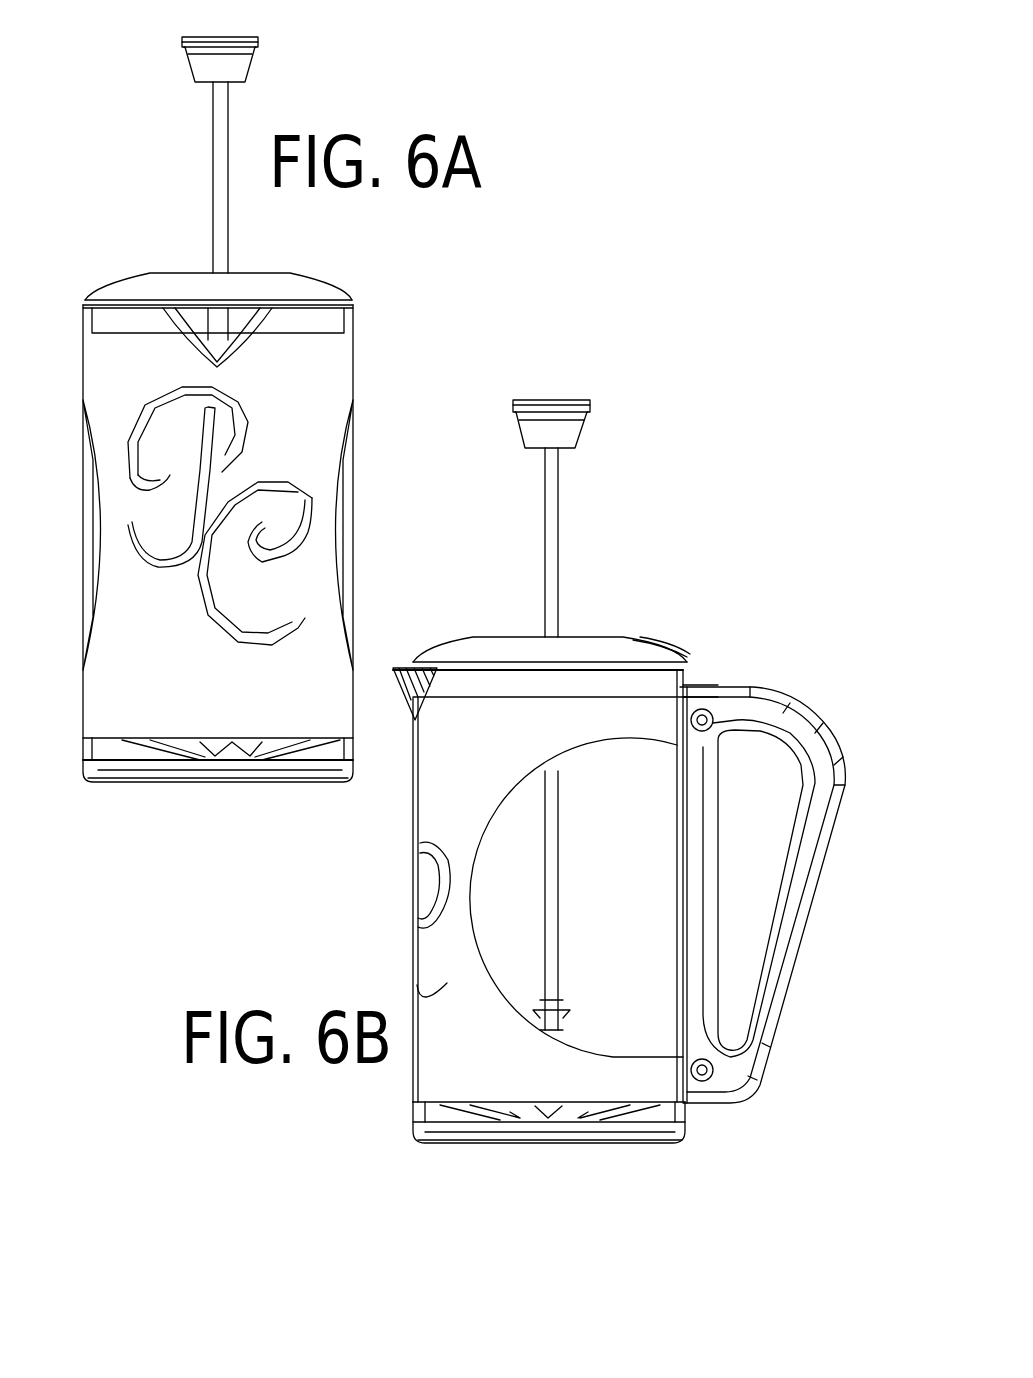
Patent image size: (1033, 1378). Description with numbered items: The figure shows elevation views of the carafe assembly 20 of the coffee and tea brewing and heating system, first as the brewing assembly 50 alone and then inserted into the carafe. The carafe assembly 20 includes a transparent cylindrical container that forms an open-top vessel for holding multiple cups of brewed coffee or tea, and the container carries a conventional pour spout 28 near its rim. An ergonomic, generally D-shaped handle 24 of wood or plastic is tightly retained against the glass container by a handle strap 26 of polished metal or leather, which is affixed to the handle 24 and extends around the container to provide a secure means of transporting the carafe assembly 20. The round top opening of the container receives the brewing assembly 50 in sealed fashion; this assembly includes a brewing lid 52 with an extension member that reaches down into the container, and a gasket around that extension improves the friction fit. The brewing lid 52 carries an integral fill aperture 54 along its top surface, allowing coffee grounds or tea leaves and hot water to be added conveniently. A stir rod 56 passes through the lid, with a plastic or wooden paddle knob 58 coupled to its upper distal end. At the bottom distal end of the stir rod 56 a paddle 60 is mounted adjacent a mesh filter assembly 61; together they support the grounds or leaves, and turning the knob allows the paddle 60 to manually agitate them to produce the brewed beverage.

In FIG. 6A, the carafe assembly 20 is at (387, 400).
In FIG. 6B, the carafe assembly 20 is at (677, 507).
In FIG. 6B, the handle 24 is at (780, 707).
In FIG. 6B, the handle strap 26 is at (613, 1077).
In FIG. 6A, the pour spout 28 is at (233, 350).
In FIG. 6B, the pour spout 28 is at (397, 667).
In FIG. 6A, the brewing assembly 50 is at (132, 247).
In FIG. 6B, the brewing assembly 50 is at (515, 548).
In FIG. 6A, the brewing lid 52 is at (300, 277).
In FIG. 6B, the brewing lid 52 is at (580, 643).
In FIG. 6B, the fill aperture 54 is at (650, 650).
In FIG. 6A, the stir rod 56 is at (213, 185).
In FIG. 6B, the stir rod 56 is at (557, 533).
In FIG. 6A, the paddle knob 58 is at (195, 68).
In FIG. 6B, the paddle knob 58 is at (577, 432).
In FIG. 6B, the paddle 60 is at (560, 1032).
In FIG. 6A, the mesh filter assembly 61 is at (167, 753).
In FIG. 6B, the mesh filter assembly 61 is at (455, 1112).